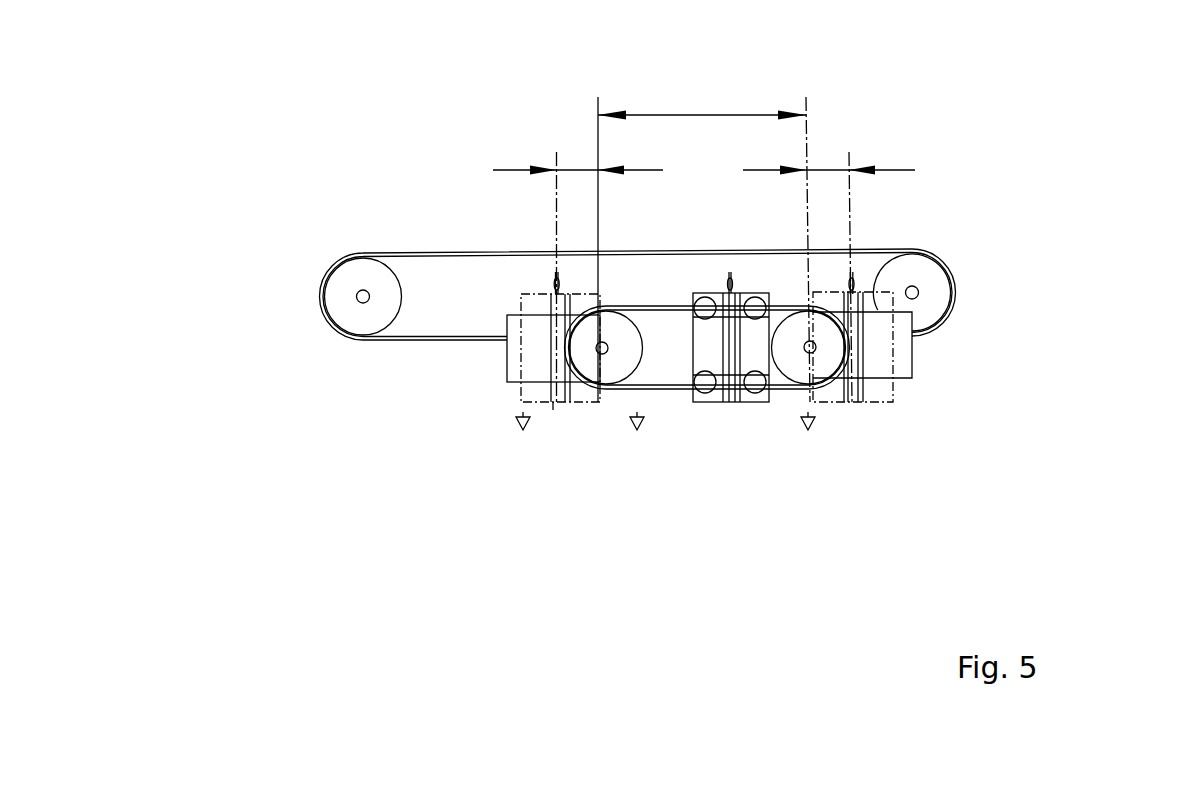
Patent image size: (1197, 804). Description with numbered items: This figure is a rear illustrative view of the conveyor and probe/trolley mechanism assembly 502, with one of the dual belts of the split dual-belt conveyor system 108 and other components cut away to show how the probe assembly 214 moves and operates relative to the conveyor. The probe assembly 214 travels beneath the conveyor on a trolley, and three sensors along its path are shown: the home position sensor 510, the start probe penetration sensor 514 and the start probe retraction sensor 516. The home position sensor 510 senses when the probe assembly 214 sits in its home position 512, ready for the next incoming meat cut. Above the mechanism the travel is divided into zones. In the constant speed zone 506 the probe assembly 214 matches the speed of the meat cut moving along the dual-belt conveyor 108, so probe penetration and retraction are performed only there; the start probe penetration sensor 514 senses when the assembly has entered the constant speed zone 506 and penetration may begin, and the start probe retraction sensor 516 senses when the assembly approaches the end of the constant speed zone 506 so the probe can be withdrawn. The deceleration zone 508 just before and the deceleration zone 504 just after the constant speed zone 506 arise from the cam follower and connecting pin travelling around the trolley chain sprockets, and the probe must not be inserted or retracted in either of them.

The belt conveyor assembly 502 is at (1017, 185).
The split dual-belt conveyor system 108 is at (317, 297).
The probe assembly 214 is at (533, 348).
The deceleration zone 504 is at (827, 162).
The constant speed zone 506 is at (727, 110).
The deceleration zone 508 is at (578, 162).
The home position sensor 510 is at (528, 434).
The home position 512 is at (556, 403).
The start probe penetration sensor 514 is at (641, 434).
The start probe retraction sensor 516 is at (810, 434).